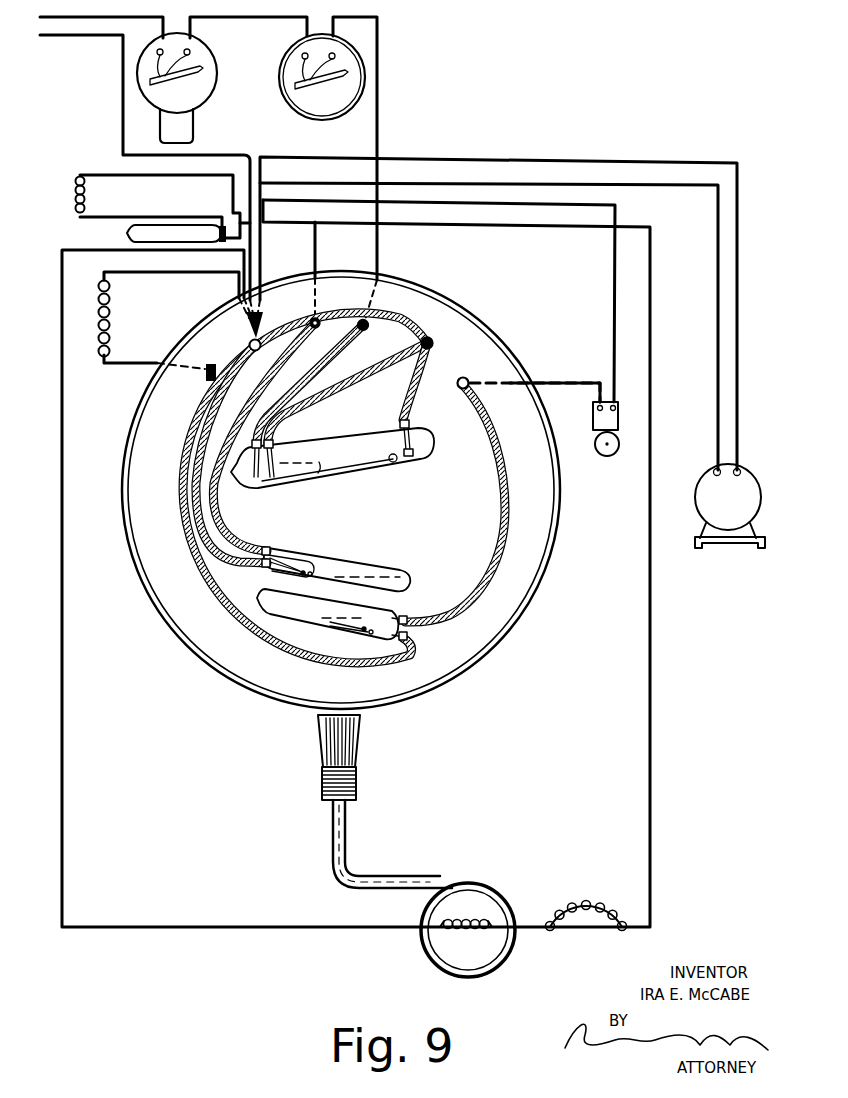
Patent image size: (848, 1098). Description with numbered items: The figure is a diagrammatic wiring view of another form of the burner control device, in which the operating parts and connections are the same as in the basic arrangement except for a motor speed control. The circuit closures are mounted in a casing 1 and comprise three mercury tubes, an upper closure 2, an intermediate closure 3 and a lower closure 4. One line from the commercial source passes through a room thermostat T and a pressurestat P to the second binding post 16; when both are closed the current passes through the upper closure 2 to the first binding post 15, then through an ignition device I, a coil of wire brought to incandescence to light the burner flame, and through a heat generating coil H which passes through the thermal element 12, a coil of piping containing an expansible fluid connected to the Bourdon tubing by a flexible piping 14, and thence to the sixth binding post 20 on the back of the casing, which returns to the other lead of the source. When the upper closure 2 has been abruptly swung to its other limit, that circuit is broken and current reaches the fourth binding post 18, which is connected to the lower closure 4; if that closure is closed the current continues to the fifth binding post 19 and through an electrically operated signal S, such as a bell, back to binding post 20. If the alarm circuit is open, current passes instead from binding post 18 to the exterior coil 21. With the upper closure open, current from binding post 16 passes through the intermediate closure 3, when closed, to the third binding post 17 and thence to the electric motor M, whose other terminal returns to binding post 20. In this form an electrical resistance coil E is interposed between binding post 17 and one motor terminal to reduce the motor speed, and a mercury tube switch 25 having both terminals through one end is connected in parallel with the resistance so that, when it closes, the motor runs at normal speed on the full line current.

The casing 1 is at (536, 603).
The upper closure 2 is at (432, 431).
The intermediate closure 3 is at (392, 566).
The lower closure 4 is at (398, 608).
The thermal element 12 is at (490, 890).
The flexible piping 14 is at (346, 838).
The first binding post 15 is at (434, 345).
The second binding post 16 is at (368, 330).
The third binding post 17 is at (321, 323).
The fourth binding post 18 is at (222, 373).
The fifth binding post 19 is at (468, 380).
The sixth binding post 20 is at (262, 342).
The coil 21 is at (118, 326).
The mercury tube switch 25 is at (200, 214).
The room thermostat T is at (214, 95).
The pressurestat P is at (338, 118).
The electrical resistance coil E is at (78, 205).
The electrically operated signal S is at (621, 420).
The electric motor M is at (730, 506).
The heat generating coil H is at (484, 916).
The ignition device I is at (606, 905).